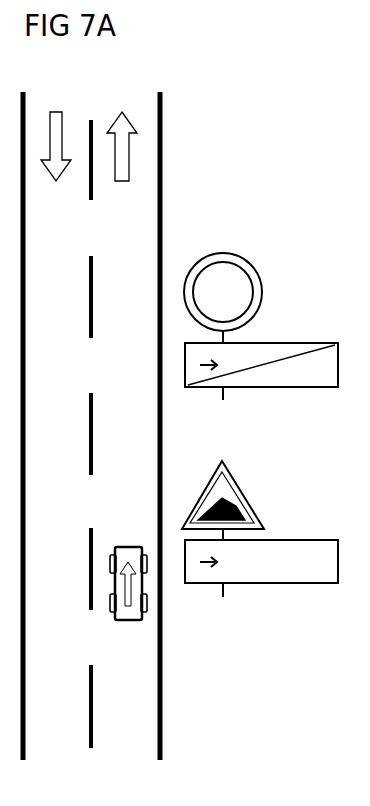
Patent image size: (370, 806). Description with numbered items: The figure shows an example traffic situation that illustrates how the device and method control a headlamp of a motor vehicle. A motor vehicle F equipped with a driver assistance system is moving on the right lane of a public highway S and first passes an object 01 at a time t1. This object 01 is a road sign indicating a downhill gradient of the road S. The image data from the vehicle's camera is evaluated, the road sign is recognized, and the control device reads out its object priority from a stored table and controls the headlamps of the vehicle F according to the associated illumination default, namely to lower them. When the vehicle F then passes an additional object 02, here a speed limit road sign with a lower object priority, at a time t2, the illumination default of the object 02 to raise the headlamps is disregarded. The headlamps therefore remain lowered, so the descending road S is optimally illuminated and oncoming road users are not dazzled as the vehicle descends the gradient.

The object 02 is at (264, 291).
The object 01 is at (246, 490).
The motor vehicle F is at (121, 644).
The public highway S is at (163, 672).
The time t1 is at (55, 586).
The time t2 is at (56, 371).